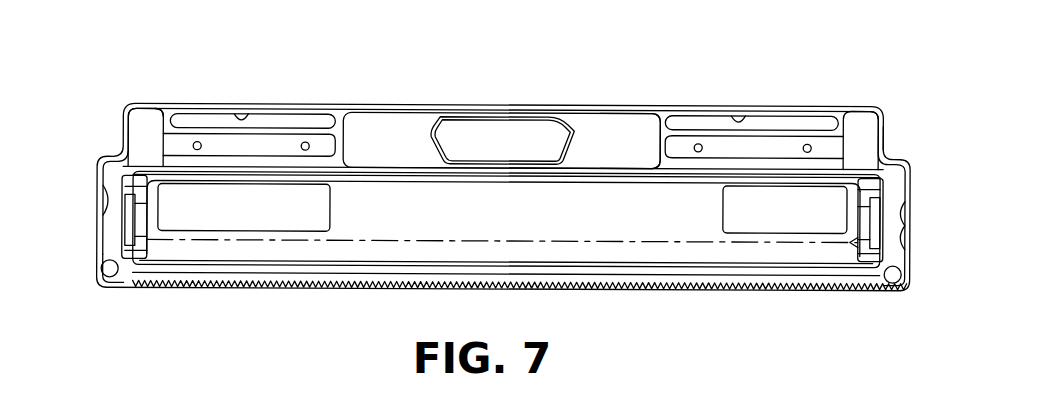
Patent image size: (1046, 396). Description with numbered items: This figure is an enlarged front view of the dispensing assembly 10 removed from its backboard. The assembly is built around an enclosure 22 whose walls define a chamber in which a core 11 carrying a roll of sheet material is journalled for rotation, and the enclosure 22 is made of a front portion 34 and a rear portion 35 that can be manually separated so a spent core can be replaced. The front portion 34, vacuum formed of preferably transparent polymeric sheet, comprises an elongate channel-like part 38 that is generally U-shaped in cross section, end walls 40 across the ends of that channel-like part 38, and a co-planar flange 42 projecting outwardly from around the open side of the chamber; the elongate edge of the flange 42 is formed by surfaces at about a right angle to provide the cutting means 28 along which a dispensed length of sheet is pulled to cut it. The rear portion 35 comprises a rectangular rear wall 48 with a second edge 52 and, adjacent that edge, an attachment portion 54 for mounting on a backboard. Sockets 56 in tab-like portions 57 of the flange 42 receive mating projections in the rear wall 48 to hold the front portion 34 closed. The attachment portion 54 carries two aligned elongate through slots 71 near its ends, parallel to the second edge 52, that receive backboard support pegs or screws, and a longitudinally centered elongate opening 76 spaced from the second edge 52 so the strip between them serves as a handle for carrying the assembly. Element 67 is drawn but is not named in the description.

The dispensing assembly 10 is at (853, 2).
The core 11 is at (127, 100).
The enclosure 22 is at (890, 293).
The cutting means 28 is at (720, 292).
The front portion 34 is at (805, 279).
The rear portion 35 is at (887, 137).
The channel-like part 38 is at (603, 230).
The end walls 40 is at (138, 187).
The flange 42 is at (325, 153).
The rear wall 48 is at (152, 122).
The second edge 52 is at (541, 111).
The attachment portion 54 is at (630, 122).
The sockets 56 is at (190, 147).
The tab-like portions 57 is at (97, 269).
The end cap 67 is at (123, 207).
The through slots 71 is at (245, 121).
The elongate opening 76 is at (485, 126).